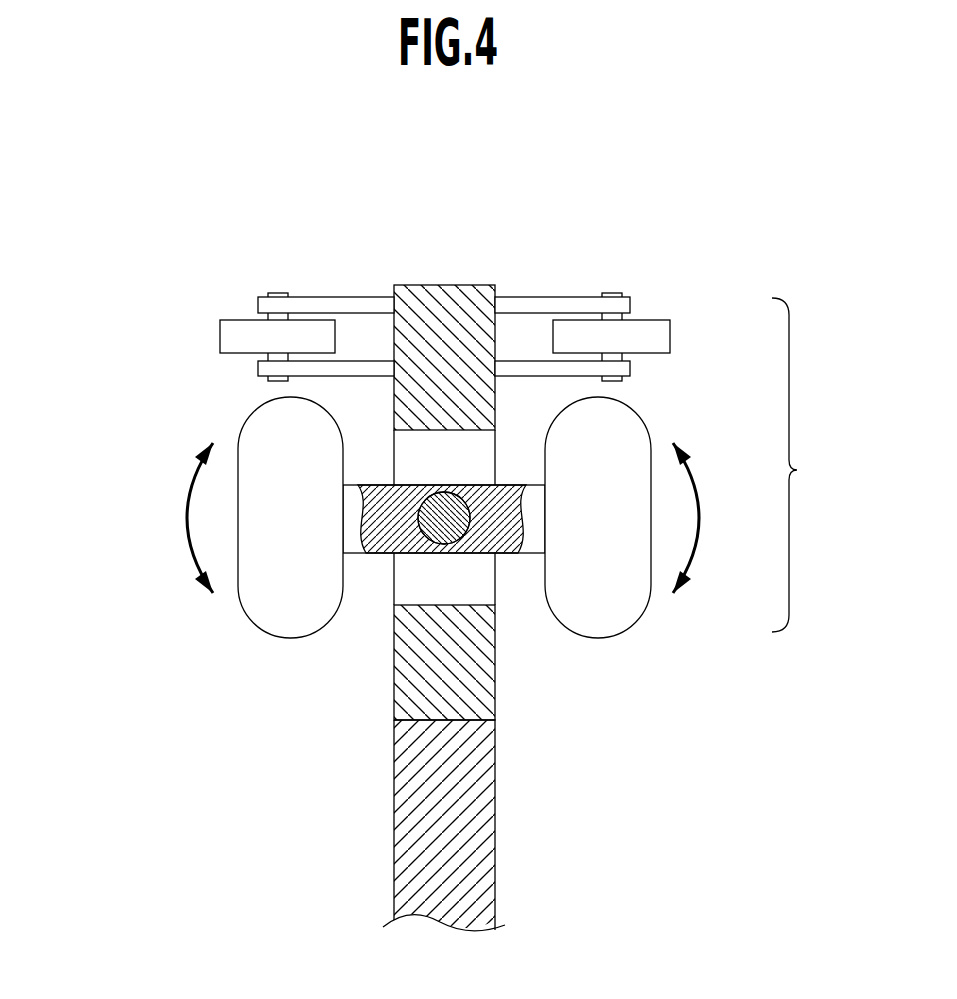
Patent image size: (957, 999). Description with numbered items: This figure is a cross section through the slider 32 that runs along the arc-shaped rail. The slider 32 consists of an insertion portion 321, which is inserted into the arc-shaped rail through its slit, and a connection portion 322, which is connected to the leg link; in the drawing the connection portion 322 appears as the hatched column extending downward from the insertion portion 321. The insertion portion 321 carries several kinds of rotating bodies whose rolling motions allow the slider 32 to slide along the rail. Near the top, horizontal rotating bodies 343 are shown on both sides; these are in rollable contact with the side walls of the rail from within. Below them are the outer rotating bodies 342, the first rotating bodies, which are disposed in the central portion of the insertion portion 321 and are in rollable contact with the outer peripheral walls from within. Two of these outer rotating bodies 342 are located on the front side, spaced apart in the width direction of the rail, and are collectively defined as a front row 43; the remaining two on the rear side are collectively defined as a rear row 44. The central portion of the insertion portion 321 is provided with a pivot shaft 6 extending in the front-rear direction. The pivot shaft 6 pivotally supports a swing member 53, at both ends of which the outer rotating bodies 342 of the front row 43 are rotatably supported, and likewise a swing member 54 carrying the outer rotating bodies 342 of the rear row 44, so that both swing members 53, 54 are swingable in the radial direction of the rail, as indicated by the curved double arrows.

The slider 32 is at (541, 532).
The insertion portion 321 is at (627, 458).
The connection portion 322 is at (482, 880).
The horizontal rotating bodies 343 is at (232, 337).
The outer rotating bodies 342 is at (270, 637).
The front row 43 is at (447, 582).
The rear row 44 is at (228, 610).
The swing member 53 is at (501, 654).
The swing member 54 is at (502, 553).
The pivot shaft 6 is at (445, 525).